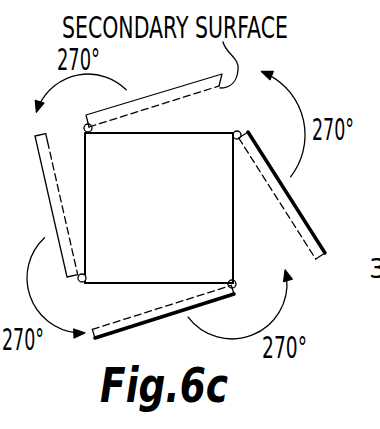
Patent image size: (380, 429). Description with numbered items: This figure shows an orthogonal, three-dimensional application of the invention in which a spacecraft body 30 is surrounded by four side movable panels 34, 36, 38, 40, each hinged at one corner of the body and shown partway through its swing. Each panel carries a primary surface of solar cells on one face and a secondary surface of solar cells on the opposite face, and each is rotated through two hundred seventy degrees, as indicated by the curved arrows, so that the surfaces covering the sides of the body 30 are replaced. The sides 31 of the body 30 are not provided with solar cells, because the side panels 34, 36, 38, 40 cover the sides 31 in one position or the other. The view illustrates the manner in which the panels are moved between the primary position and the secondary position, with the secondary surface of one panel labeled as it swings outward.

The body 30 is at (173, 258).
The surfaces of the body 31 is at (236, 243).
The side movable panel 34 is at (137, 327).
The side movable panel 36 is at (52, 208).
The side movable panel 38 is at (183, 86).
The side movable panel 40 is at (297, 198).